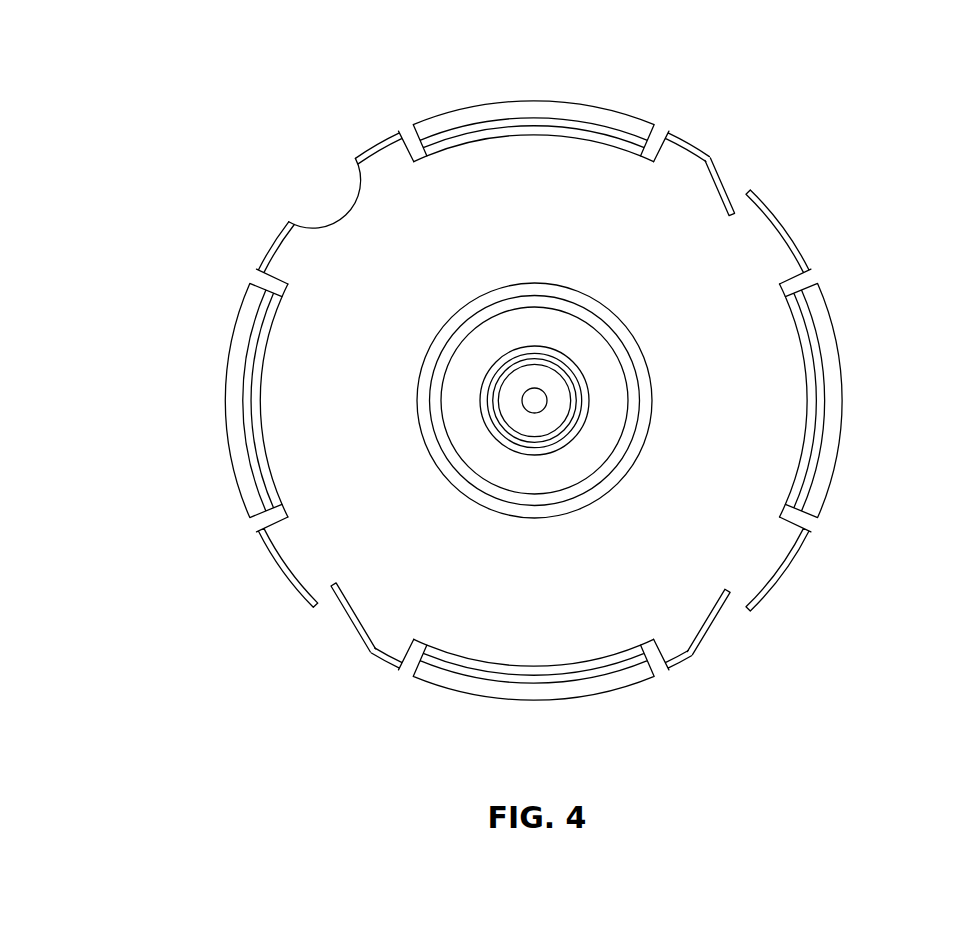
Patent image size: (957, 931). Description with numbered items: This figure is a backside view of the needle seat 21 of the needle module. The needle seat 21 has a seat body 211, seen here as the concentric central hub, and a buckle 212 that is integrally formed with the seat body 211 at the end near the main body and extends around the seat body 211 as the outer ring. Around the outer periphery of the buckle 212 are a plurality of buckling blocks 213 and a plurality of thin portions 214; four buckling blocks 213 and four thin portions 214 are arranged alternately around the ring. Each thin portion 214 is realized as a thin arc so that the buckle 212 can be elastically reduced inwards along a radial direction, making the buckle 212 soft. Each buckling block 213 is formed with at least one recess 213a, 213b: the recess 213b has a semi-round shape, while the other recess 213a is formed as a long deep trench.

The needle seat 21 is at (748, 148).
The seat body 211 is at (632, 345).
The buckle 212 is at (760, 445).
The buckling block 213 is at (381, 140).
The recess 213a is at (743, 197).
The recess 213b is at (338, 217).
The thin portion 214 is at (540, 100).